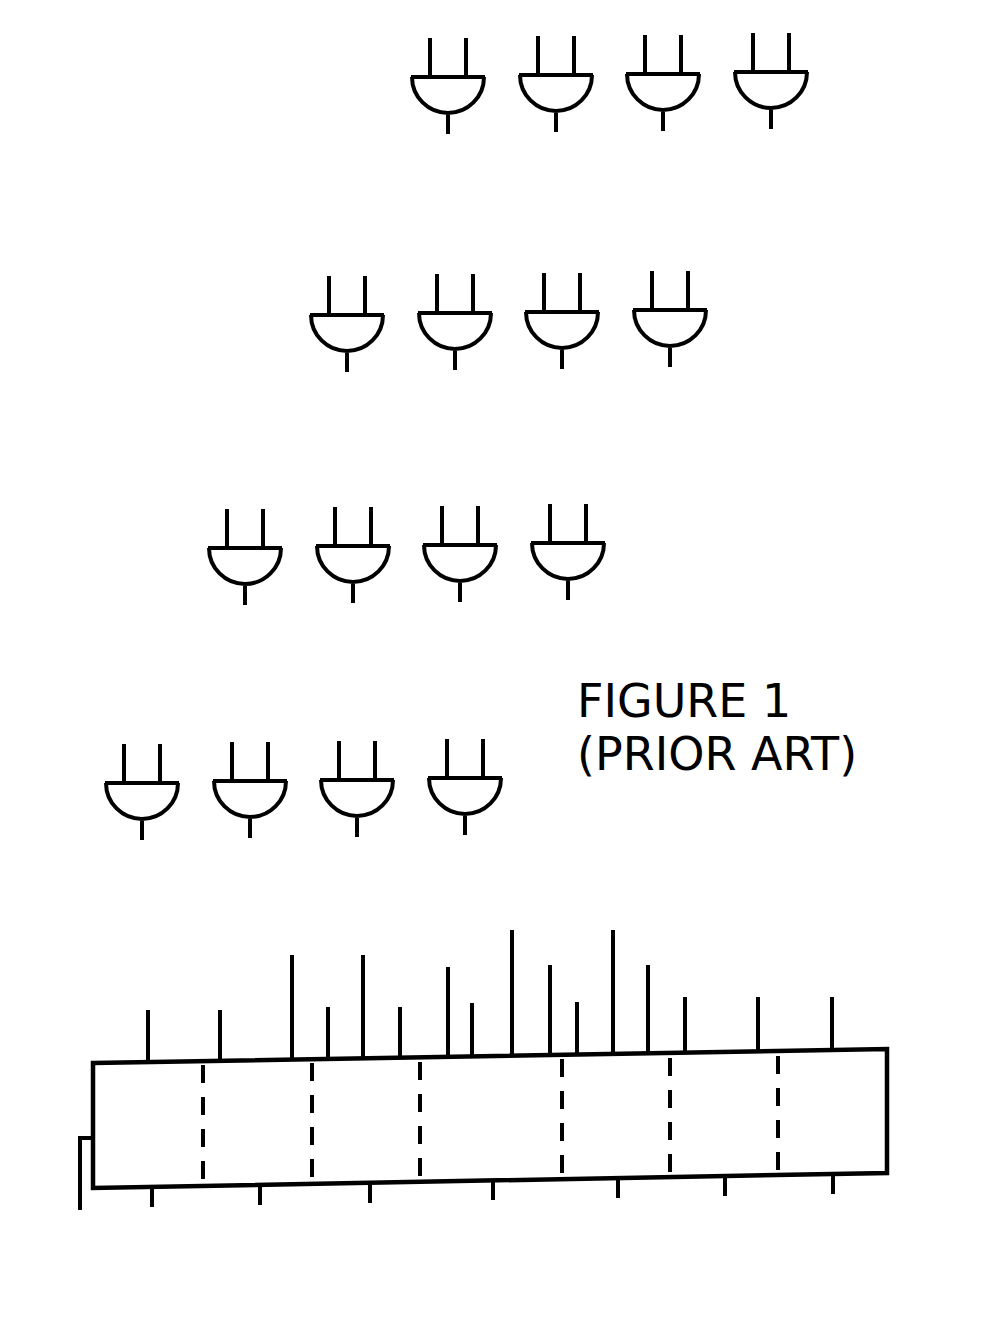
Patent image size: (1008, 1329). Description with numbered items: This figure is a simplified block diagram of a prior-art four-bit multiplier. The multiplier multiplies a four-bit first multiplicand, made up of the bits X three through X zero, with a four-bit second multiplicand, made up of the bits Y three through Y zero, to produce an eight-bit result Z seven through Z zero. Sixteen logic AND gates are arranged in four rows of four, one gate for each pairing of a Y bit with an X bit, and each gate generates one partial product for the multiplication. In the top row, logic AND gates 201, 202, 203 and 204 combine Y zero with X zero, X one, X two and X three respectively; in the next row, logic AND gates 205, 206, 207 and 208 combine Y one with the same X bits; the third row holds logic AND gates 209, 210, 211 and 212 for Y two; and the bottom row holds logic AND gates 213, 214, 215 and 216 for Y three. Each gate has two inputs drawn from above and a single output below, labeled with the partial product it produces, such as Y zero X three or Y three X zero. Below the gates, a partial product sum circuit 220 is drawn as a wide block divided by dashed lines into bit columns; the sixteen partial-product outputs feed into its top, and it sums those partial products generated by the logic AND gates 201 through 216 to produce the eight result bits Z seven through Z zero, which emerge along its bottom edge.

The logic AND gate 201 is at (755, 107).
The logic AND gate 202 is at (647, 109).
The logic AND gate 203 is at (540, 110).
The logic AND gate 204 is at (432, 112).
The logic AND gate 205 is at (654, 345).
The logic AND gate 206 is at (546, 347).
The logic AND gate 207 is at (439, 348).
The logic AND gate 208 is at (331, 350).
The logic AND gate 209 is at (552, 578).
The logic AND gate 210 is at (444, 580).
The logic AND gate 211 is at (337, 581).
The logic AND gate 212 is at (229, 583).
The logic AND gate 213 is at (449, 813).
The logic AND gate 214 is at (341, 815).
The logic AND gate 215 is at (234, 816).
The logic AND gate 216 is at (126, 818).
The partial product sum circuit 220 is at (93, 1082).